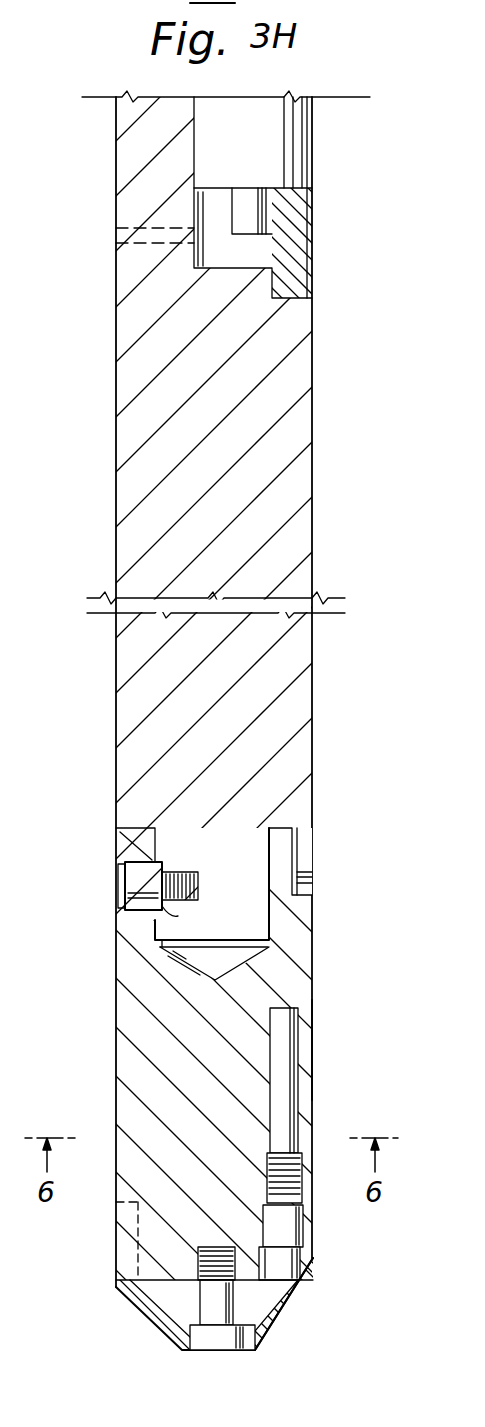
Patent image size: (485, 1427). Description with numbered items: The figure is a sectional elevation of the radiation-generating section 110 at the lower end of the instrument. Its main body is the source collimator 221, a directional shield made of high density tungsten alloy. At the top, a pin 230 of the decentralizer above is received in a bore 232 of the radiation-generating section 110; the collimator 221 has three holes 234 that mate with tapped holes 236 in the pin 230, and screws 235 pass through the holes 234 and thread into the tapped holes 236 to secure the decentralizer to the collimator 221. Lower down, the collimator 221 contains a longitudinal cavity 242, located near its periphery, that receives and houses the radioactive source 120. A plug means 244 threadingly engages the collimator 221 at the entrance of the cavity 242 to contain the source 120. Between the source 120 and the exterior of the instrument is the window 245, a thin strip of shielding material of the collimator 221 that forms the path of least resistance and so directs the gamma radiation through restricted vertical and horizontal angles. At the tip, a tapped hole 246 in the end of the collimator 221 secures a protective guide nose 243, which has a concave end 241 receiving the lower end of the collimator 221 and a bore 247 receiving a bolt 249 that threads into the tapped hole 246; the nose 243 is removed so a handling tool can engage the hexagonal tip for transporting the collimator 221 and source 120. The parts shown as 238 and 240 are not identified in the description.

The radiation-generating section 110 is at (112, 1075).
The radioactive source 120 is at (288, 1118).
The source collimator 221 is at (130, 1022).
The pin 230 is at (260, 892).
The bore 232 is at (252, 948).
The holes 234 is at (116, 852).
The screws 235 is at (138, 880).
The tapped holes 236 is at (157, 920).
The seal 238 is at (304, 866).
The recess 240 is at (305, 836).
The concave end 241 is at (135, 1283).
The longitudinal cavity 242 is at (287, 1083).
The protective guide nose 243 is at (300, 1312).
The plug means 244 is at (302, 1227).
The window 245 is at (310, 1048).
The tapped hole 246 is at (197, 1258).
The bore 247 is at (197, 1332).
The bolt 249 is at (258, 1336).